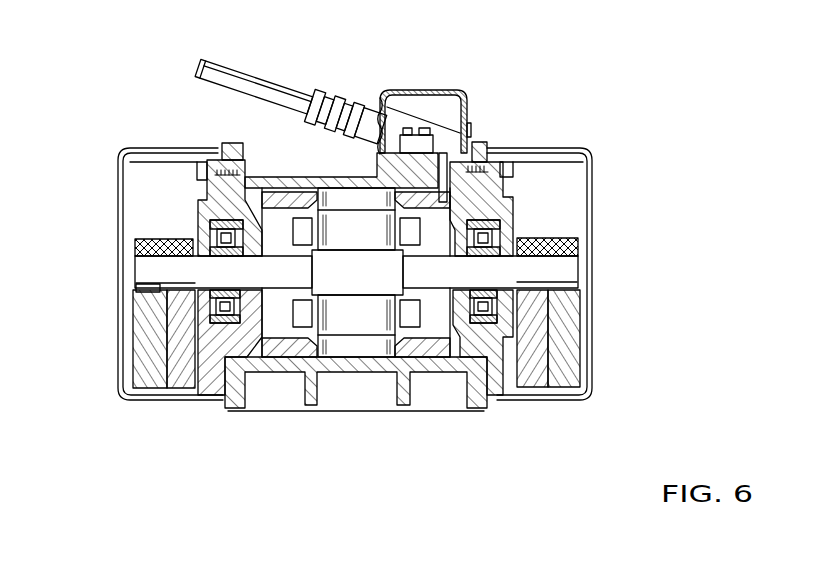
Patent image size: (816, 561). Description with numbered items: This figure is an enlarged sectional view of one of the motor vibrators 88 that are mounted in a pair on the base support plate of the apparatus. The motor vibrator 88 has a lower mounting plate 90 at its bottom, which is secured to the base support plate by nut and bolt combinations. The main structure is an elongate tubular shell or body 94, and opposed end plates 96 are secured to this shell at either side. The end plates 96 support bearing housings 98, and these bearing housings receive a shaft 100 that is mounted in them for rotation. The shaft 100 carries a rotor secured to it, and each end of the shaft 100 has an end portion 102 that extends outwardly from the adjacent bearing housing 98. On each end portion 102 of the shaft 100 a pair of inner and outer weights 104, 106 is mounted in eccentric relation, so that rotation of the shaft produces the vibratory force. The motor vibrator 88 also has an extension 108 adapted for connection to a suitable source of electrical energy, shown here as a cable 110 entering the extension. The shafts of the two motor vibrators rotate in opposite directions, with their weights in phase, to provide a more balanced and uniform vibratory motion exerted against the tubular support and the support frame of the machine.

The motor vibrator 88 is at (529, 107).
The lower mounting plate 90 is at (375, 365).
The elongate tubular shell or body 94 is at (323, 180).
The end plate 96 is at (220, 197).
The bearing housing 98 is at (233, 323).
The shaft 100 is at (376, 282).
The end portion 102 is at (150, 272).
The inner weight 104 is at (182, 382).
The outer weight 106 is at (148, 345).
The extension 108 is at (340, 108).
The cable 110 is at (248, 80).